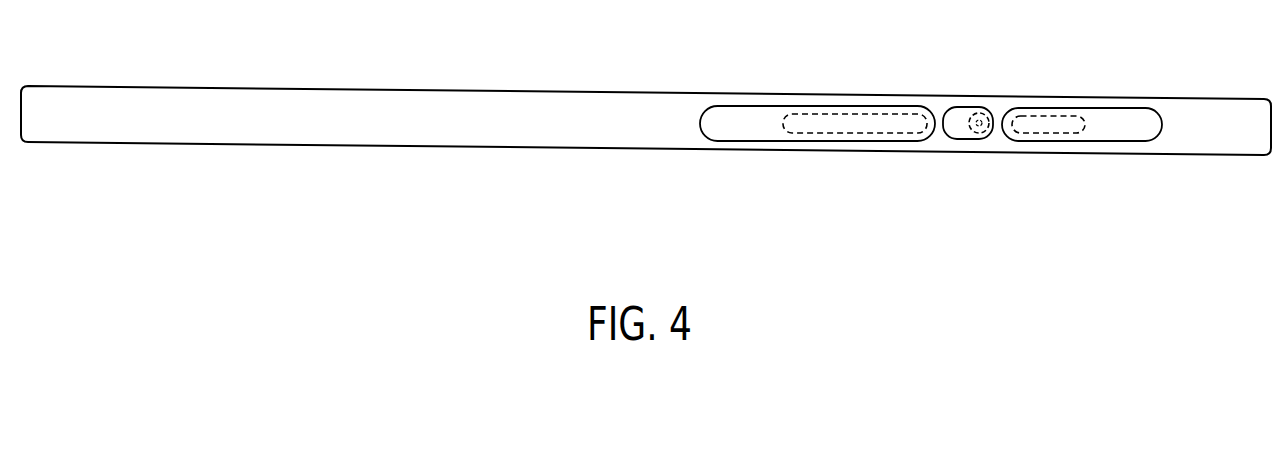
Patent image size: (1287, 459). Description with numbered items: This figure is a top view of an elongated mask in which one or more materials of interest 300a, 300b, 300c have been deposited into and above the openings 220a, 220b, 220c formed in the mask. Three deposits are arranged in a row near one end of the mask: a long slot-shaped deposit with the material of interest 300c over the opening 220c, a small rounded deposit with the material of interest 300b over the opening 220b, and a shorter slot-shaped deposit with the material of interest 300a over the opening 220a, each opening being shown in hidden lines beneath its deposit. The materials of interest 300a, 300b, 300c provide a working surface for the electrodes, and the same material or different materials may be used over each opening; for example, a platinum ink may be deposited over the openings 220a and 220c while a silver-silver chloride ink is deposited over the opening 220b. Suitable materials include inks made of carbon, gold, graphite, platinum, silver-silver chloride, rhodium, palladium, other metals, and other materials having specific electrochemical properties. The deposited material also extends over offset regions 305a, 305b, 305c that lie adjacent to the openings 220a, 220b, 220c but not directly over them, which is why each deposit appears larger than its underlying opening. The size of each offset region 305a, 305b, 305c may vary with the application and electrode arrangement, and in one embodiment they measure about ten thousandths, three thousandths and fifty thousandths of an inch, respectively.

The offset region 305a is at (1123, 125).
The offset region 305b is at (952, 127).
The offset region 305c is at (732, 122).
The material of interest 300a is at (1035, 142).
The material of interest 300b is at (972, 140).
The material of interest 300c is at (830, 138).
The opening 220a is at (1060, 114).
The opening 220b is at (983, 110).
The opening 220c is at (868, 125).